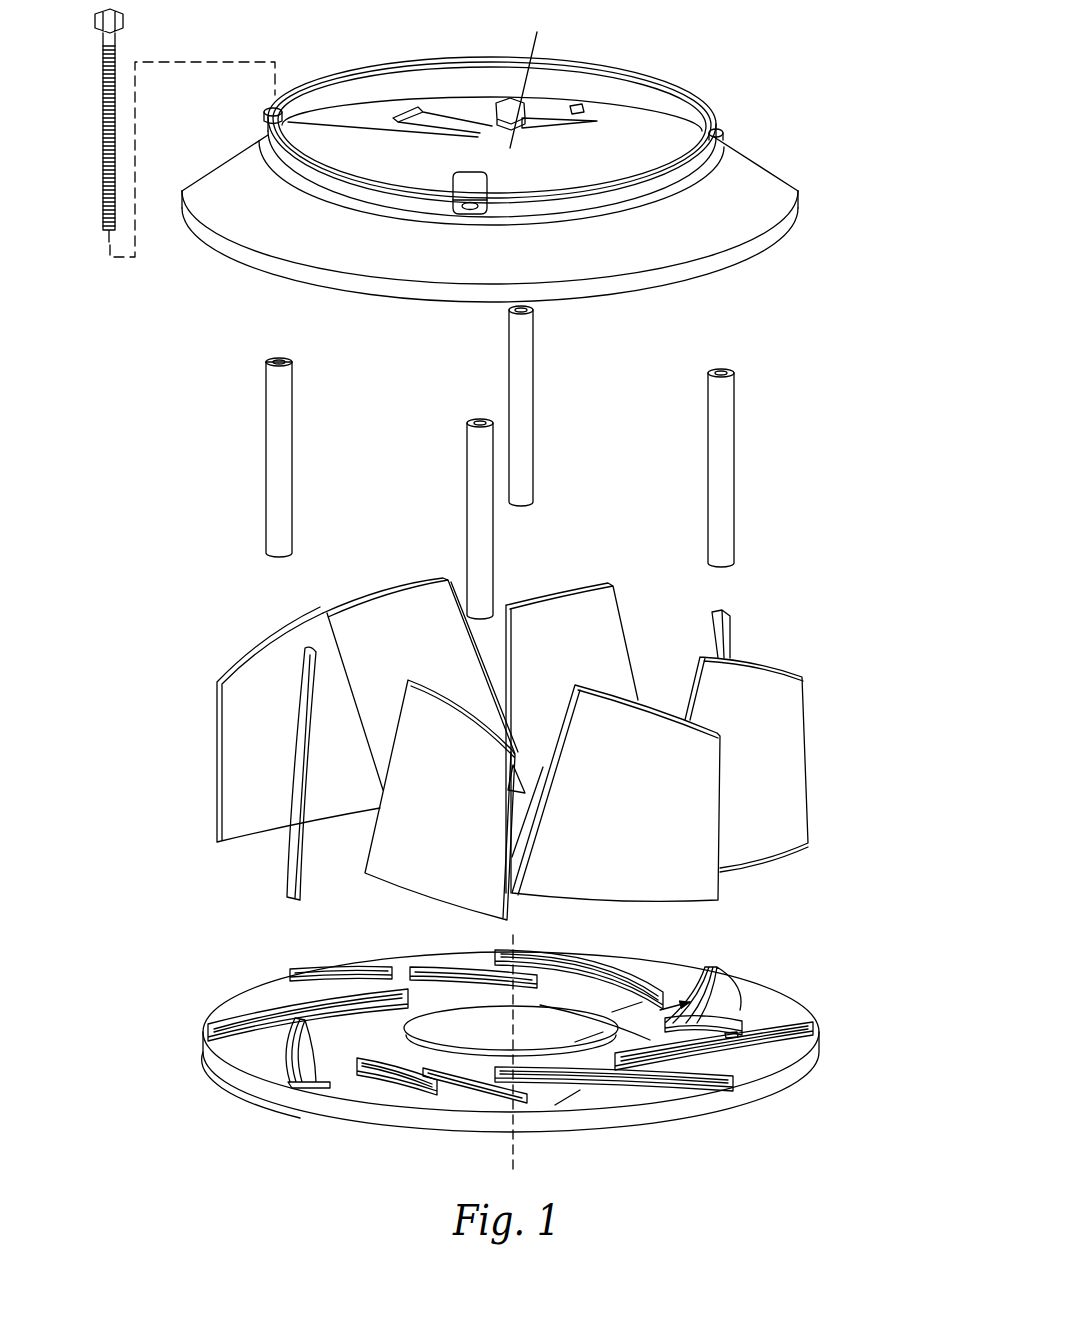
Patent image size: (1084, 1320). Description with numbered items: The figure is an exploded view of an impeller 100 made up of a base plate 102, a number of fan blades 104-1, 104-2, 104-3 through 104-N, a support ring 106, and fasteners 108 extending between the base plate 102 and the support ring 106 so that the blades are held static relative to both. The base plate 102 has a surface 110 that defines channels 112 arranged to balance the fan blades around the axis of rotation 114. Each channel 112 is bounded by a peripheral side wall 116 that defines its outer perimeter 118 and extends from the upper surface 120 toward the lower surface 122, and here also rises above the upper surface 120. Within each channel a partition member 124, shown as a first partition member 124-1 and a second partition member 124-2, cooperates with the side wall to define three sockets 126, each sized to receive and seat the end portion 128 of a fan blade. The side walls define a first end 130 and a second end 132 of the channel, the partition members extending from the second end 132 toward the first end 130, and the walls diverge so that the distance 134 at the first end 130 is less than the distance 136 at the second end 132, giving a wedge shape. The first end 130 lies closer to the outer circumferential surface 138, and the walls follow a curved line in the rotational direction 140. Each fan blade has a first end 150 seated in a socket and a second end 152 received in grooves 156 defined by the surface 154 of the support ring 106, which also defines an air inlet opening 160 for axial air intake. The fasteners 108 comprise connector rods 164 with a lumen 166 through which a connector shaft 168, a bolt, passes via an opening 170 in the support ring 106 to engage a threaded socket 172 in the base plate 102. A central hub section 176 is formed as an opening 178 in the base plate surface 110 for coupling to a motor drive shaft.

The impeller 100 is at (533, 759).
The base plate 102 is at (499, 1041).
The fan blade 104-1 is at (604, 664).
The fan blade 104-2 is at (439, 664).
The fan blade 104-3 is at (292, 724).
The fan blade 104-N is at (800, 759).
The support ring 106 is at (521, 154).
The fasteners 108 is at (519, 458).
The surface 110 is at (358, 1070).
The channel 112 is at (518, 1042).
The axis of rotation 114 is at (523, 937).
The peripheral side wall 116 is at (327, 1043).
The outer perimeter 118 is at (493, 1023).
The upper surface 120 is at (354, 1091).
The lower surface 122 is at (754, 986).
The partition member 124 is at (754, 986).
The first partition member 124-1 is at (232, 1030).
The second partition member 124-2 is at (332, 1032).
The socket 126 is at (344, 1030).
The end portion 128 is at (513, 759).
The first end 130 is at (573, 1019).
The second end 132 is at (392, 970).
The distance 134 is at (608, 1113).
The distance 136 is at (645, 1008).
The outer circumferential surface 138 is at (222, 1079).
The rotational direction 140 is at (530, 1016).
The first end 150 is at (268, 836).
The second end 152 is at (266, 640).
The surface 154 is at (476, 128).
The grooves 156 is at (378, 133).
The air inlet opening 160 is at (537, 77).
The connector rods 164 is at (534, 377).
The lumen 166 is at (280, 352).
The connector shaft 168 is at (132, 36).
The opening 170 is at (270, 111).
The threaded socket 172 is at (748, 1026).
The central hub section 176 is at (503, 1010).
The opening 178 is at (524, 1027).